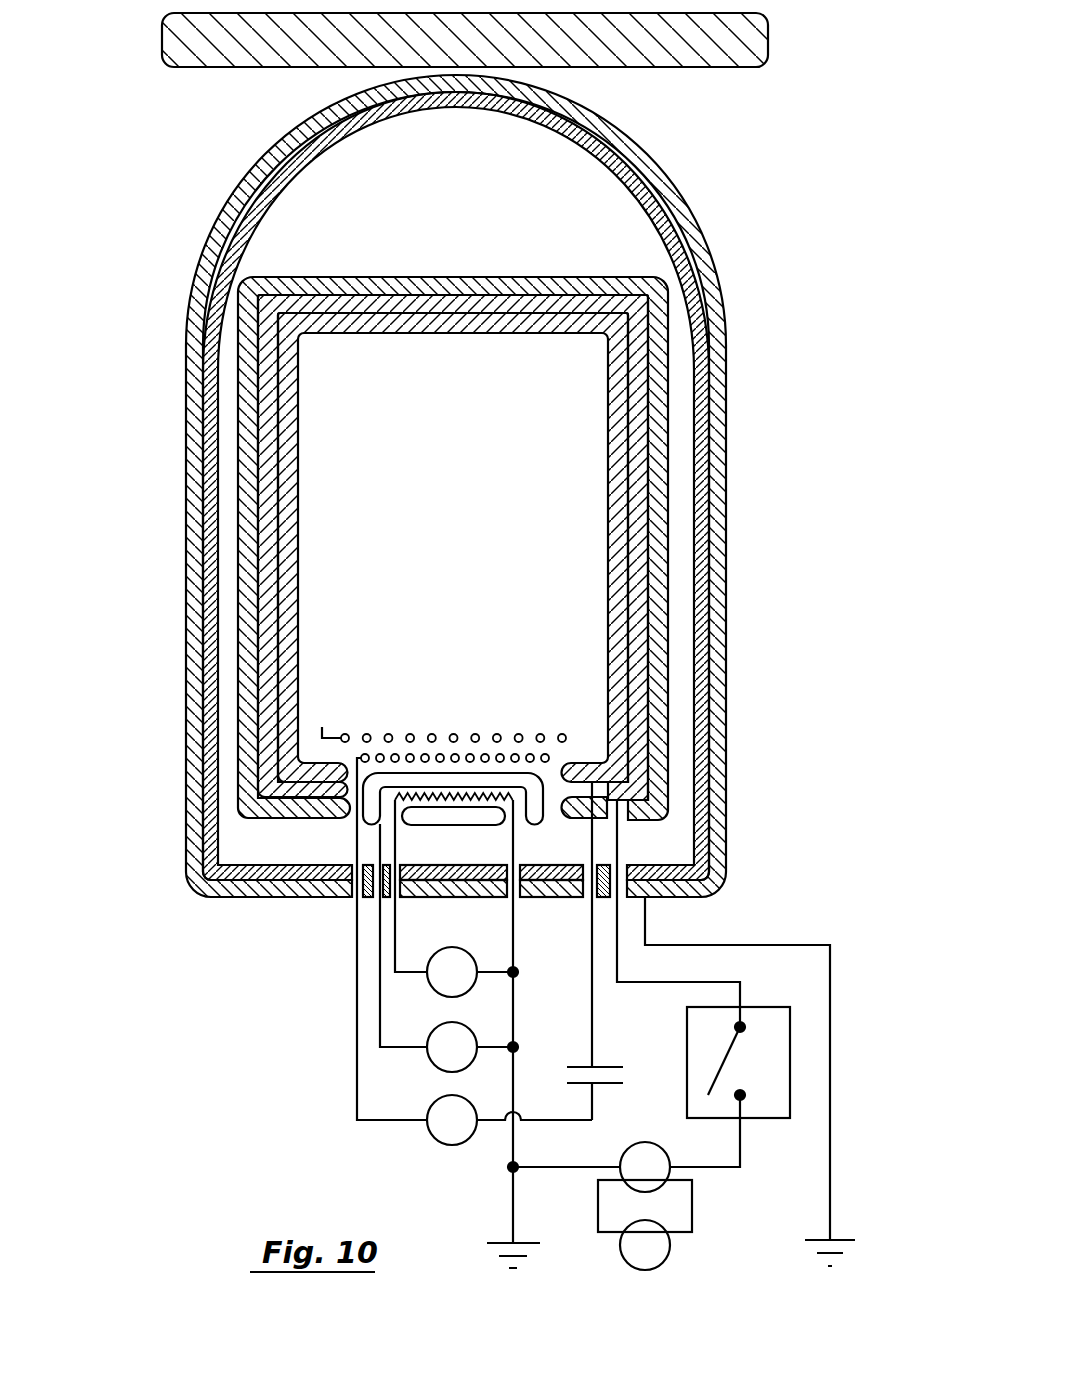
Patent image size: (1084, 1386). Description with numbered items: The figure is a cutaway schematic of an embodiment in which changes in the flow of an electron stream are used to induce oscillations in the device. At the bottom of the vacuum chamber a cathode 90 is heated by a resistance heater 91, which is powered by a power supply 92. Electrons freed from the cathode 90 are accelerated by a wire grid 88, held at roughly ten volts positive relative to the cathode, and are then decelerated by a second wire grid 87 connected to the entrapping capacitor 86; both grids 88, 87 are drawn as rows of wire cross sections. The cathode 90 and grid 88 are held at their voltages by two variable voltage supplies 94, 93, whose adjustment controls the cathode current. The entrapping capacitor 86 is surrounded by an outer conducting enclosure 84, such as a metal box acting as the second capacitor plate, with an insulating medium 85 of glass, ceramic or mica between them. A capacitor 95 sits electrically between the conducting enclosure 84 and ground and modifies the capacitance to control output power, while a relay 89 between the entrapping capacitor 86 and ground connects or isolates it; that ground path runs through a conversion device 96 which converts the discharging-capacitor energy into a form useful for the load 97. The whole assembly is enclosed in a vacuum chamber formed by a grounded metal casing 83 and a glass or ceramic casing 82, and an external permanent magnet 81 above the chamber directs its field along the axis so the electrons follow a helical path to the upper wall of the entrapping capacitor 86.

The permanent magnet 81 is at (766, 54).
The glass or ceramic casing 82 is at (715, 262).
The metal casing 83 is at (635, 186).
The outer conducting enclosure 84 is at (496, 277).
The insulating medium 85 is at (657, 485).
The entrapping capacitor 86 is at (625, 519).
The second wire grid 87 is at (497, 734).
The accelerating wire grid 88 is at (546, 754).
The relay 89 is at (773, 1118).
The cathode 90 is at (388, 773).
The resistance heater 91 is at (433, 793).
The power supply 92 is at (450, 947).
The voltage supply 93 is at (437, 1067).
The voltage supply 94 is at (445, 1145).
The capacitor 95 is at (610, 1067).
The conversion device 96 is at (648, 1142).
The load 97 is at (668, 1262).